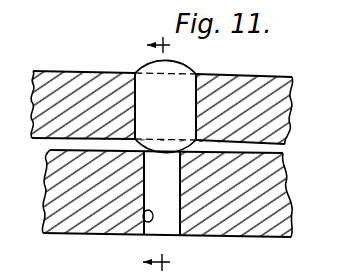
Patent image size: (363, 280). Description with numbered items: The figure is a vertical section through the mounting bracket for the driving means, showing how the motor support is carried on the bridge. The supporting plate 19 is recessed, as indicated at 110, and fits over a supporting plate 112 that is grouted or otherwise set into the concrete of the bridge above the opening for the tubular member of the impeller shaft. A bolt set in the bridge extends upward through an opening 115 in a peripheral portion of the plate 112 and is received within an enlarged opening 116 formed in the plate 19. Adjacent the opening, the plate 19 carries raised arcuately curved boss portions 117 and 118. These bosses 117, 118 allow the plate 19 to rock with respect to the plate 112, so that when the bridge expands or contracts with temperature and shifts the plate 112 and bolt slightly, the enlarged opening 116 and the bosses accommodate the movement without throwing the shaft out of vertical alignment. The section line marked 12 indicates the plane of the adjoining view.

The supporting plate 19 is at (289, 108).
The supporting plate 112 is at (292, 203).
The raised arcuately curved boss portion 117 is at (147, 64).
The enlarged opening 116 is at (178, 92).
The recess 110 is at (46, 139).
The raised arcuately curved boss portion 118 is at (284, 150).
The opening 115 is at (135, 231).
The section line of Fig. 12 is at (168, 155).